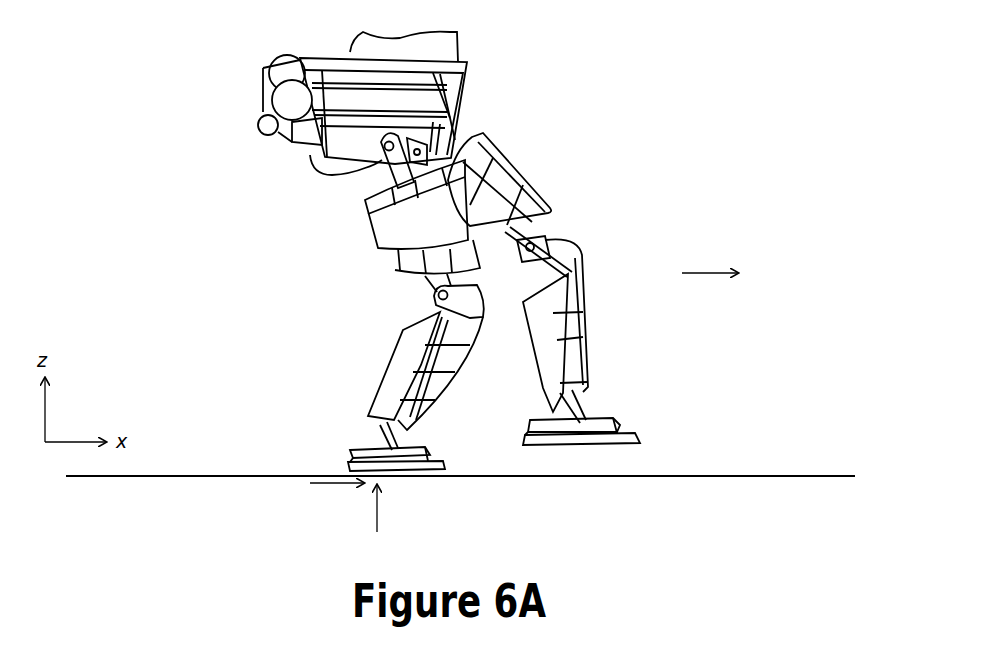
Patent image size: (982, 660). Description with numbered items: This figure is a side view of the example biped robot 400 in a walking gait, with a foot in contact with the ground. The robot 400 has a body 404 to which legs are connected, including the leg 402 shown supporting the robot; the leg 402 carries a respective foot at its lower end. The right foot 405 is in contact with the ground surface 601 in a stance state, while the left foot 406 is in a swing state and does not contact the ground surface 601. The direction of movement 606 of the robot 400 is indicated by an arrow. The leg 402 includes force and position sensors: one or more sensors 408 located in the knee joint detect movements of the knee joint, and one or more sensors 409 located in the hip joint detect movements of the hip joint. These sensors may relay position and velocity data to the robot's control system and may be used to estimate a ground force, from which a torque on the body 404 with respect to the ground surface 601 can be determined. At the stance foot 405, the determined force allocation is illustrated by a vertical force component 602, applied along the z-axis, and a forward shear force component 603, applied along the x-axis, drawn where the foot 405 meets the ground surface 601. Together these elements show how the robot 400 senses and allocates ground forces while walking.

The biped robot 400 is at (524, 36).
The leg 402 is at (357, 250).
The body 404 is at (462, 100).
The right foot 405 is at (343, 452).
The left foot 406 is at (637, 440).
The sensor located in a knee joint 408 is at (440, 297).
The sensor located in a hip joint 409 is at (387, 152).
The ground surface 601 is at (792, 474).
The vertical force component 602 is at (379, 502).
The forward shear force component 603 is at (343, 490).
The direction of movement 606 is at (713, 275).